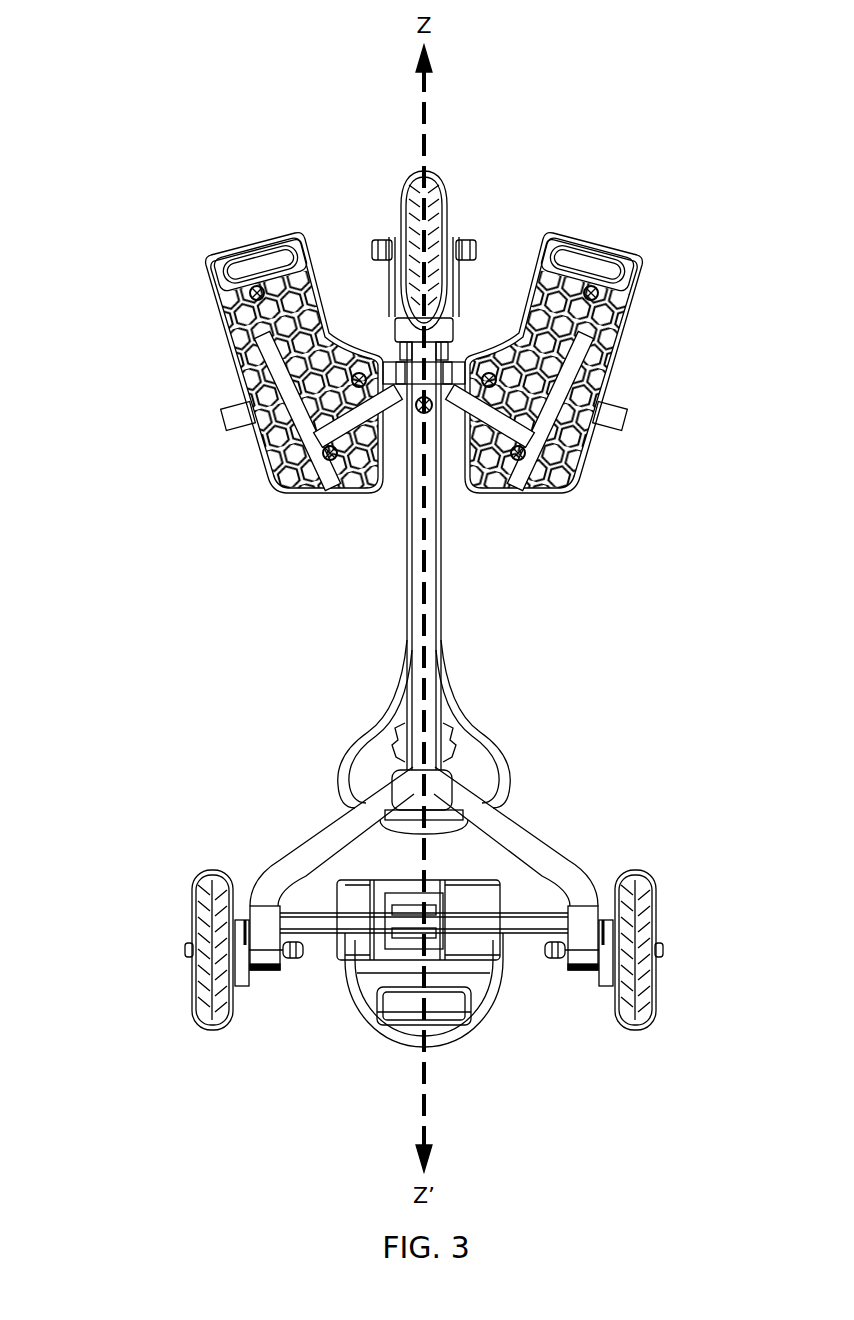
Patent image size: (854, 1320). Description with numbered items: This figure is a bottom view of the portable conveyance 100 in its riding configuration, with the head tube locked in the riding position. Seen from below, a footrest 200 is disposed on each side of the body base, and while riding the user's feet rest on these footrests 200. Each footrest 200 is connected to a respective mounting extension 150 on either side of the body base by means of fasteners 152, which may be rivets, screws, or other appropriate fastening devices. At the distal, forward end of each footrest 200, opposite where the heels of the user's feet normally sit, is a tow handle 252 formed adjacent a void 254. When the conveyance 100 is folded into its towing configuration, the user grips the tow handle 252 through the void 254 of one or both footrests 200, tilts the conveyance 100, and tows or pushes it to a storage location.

The portable conveyance 100 is at (138, 114).
The mounting extension 150 is at (330, 484).
The fastener 152 is at (262, 327).
The footrest 200 is at (212, 252).
The tow handle 252 is at (268, 235).
The void 254 is at (273, 262).